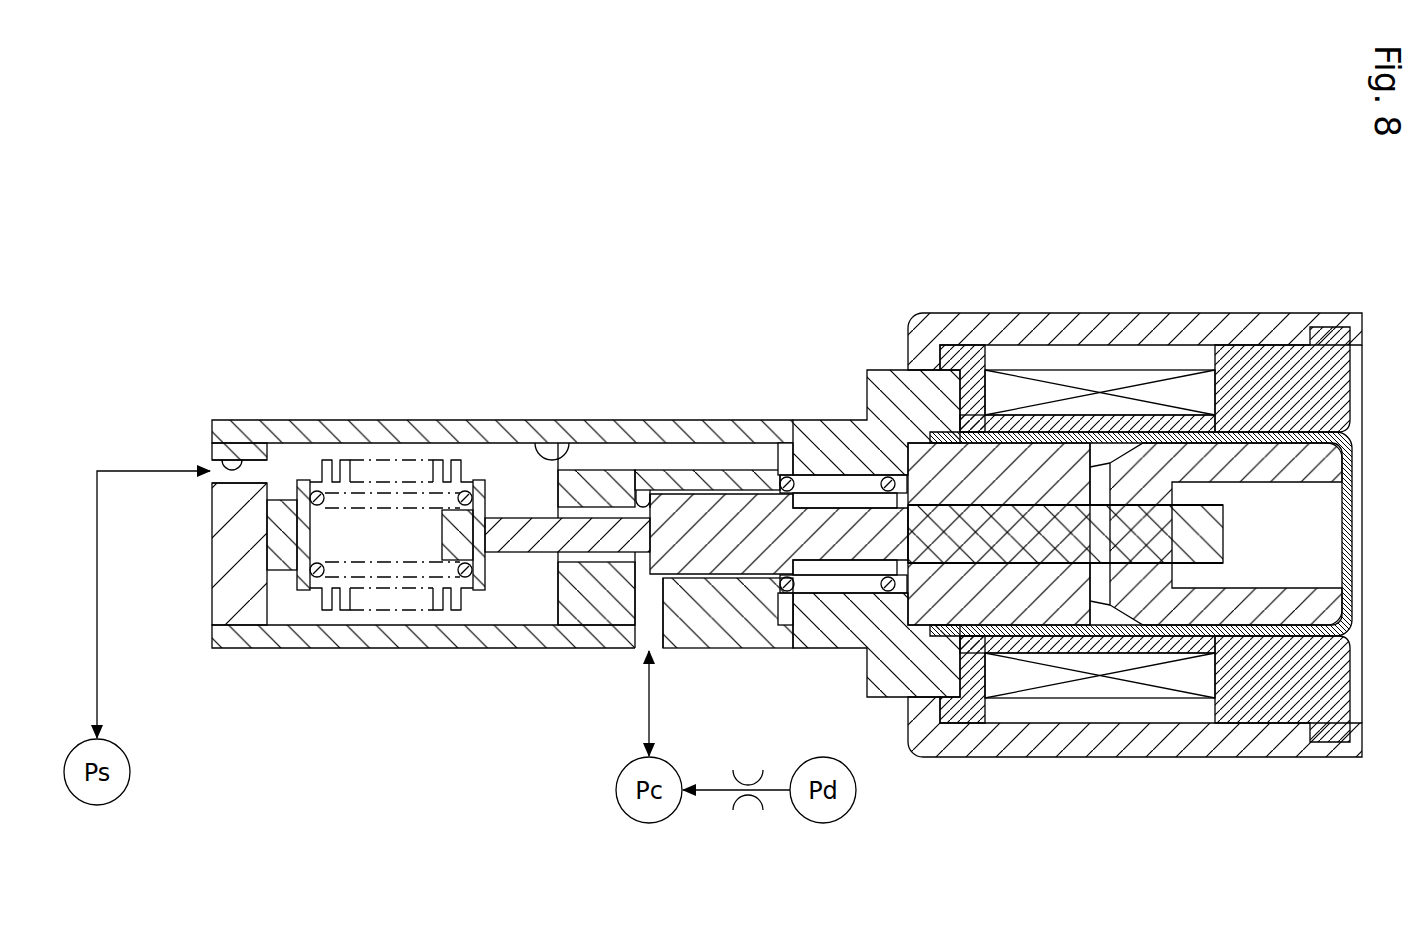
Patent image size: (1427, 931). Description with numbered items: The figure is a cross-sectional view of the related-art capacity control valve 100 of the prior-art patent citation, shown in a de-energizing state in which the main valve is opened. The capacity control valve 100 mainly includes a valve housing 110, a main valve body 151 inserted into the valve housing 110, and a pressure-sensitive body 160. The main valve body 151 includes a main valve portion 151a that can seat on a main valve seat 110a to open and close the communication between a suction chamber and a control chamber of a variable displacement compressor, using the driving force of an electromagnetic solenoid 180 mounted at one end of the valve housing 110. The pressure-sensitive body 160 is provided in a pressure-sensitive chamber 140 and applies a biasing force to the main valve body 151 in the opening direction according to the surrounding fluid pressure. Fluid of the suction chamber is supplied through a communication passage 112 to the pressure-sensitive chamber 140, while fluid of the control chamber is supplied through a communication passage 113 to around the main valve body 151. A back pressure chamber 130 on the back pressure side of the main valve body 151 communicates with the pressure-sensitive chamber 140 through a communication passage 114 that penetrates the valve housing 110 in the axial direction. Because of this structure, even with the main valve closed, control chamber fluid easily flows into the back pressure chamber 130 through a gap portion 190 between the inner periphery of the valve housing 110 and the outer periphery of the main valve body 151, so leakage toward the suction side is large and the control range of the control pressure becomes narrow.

The capacity control valve 100 is at (218, 285).
The valve housing 110 is at (263, 416).
The main valve seat 110a is at (637, 495).
The communication passage 112 is at (212, 443).
The communication passage 113 is at (640, 652).
The communication passage 114 is at (557, 463).
The back pressure chamber 130 is at (837, 495).
The pressure-sensitive chamber 140 is at (480, 465).
The main valve body 151 is at (760, 478).
The main valve portion 151a is at (650, 505).
The pressure-sensitive body 160 is at (363, 452).
The electromagnetic solenoid 180 is at (1124, 250).
The gap portion 190 is at (720, 494).